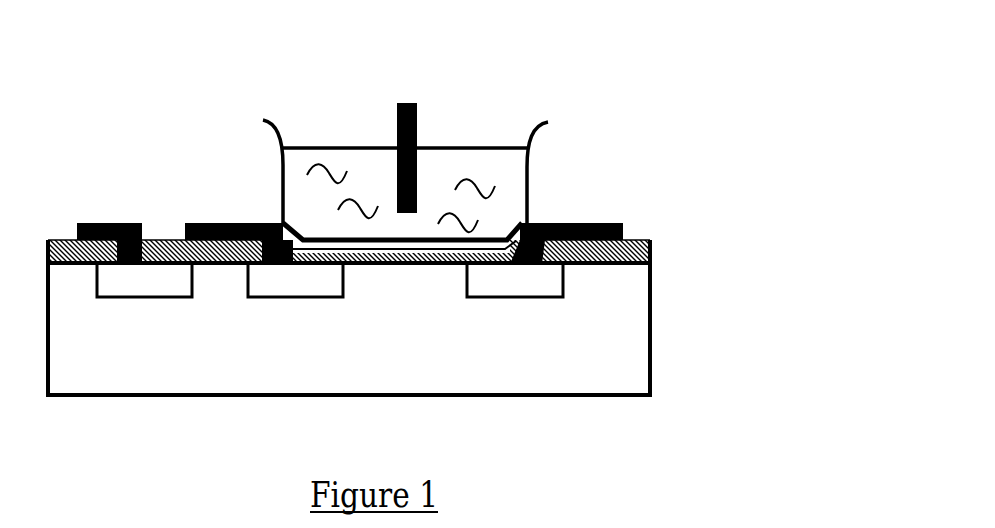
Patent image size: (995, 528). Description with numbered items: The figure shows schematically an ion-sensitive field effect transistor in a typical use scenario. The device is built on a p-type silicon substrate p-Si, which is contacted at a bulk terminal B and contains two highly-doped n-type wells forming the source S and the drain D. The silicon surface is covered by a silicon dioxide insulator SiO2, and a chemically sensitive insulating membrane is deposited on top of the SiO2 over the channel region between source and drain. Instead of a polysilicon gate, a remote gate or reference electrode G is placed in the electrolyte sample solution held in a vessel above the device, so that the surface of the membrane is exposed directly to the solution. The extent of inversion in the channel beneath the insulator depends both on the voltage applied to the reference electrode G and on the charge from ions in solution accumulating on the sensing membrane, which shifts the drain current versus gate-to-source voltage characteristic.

The p-type silicon substrate B is at (110, 223).
The source S is at (210, 223).
The drain D is at (607, 223).
The gate contact G is at (407, 103).
The silicon dioxide insulator SiO2 is at (400, 257).
The chemically sensitive membrane is at (428, 247).
The p-type silicon substrate p-Si is at (349, 329).
The sample solution vessel is at (405, 176).